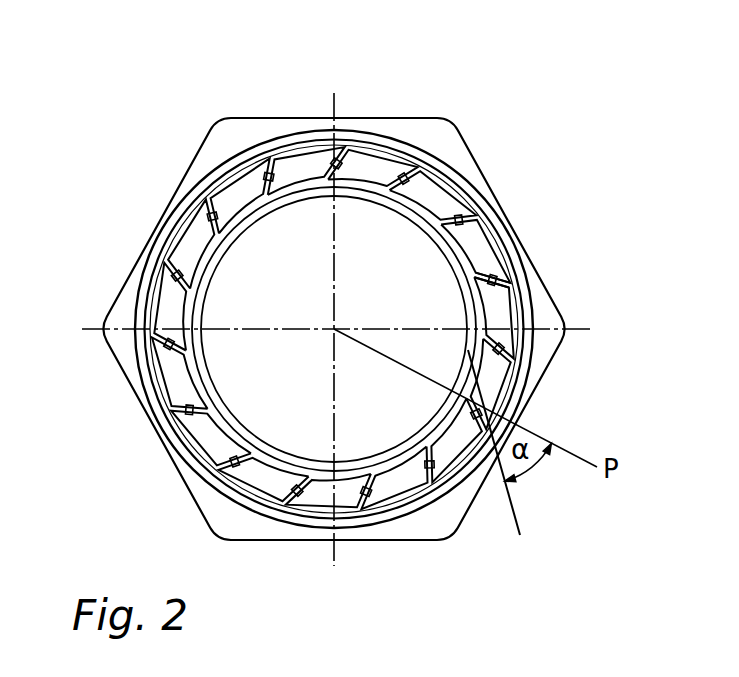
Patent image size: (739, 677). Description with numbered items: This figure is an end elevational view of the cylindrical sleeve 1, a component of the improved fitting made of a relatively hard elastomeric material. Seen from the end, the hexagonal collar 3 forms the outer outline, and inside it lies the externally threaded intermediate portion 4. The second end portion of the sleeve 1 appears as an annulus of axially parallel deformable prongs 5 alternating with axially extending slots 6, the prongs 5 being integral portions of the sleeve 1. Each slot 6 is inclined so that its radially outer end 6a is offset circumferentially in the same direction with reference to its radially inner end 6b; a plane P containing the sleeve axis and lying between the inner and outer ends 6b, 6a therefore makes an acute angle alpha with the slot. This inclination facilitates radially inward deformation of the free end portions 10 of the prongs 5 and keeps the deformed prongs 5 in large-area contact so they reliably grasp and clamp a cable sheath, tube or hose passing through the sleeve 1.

The cylindrical sleeve 1 is at (157, 150).
The hexagonal collar 3 is at (443, 143).
The externally threaded intermediate portion 4 is at (500, 235).
The deformable prongs 5 is at (345, 188).
The axially extending slots 6 is at (212, 190).
The radially outer end of slot 6a is at (508, 280).
The radially inner end of slot 6b is at (470, 272).
The free end portions of the prongs 10 is at (375, 157).